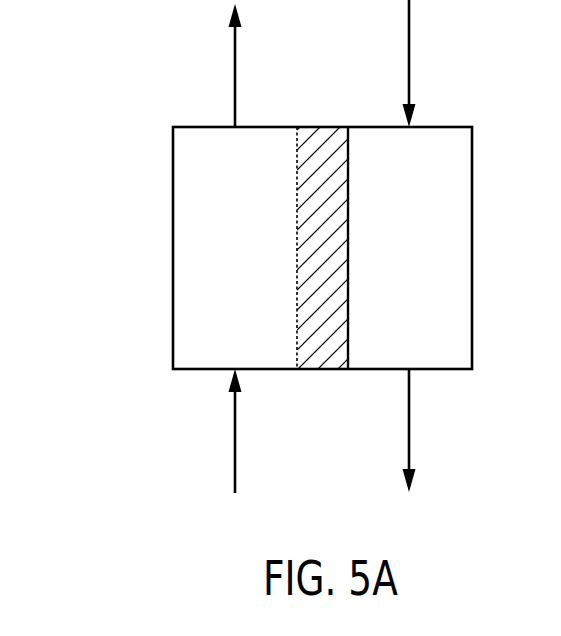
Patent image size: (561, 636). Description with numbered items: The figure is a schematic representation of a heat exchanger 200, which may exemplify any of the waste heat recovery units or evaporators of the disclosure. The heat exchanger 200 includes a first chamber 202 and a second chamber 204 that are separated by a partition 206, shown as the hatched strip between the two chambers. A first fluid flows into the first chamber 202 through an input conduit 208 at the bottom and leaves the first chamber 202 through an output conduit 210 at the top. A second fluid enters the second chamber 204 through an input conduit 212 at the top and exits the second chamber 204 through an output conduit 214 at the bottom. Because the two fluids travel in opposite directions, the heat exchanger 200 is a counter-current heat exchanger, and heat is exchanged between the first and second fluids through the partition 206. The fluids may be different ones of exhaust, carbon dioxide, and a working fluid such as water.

The heat exchanger 200 is at (96, 336).
The first chamber 202 is at (252, 258).
The second chamber 204 is at (425, 258).
The partition 206 is at (322, 145).
The input conduit 208 is at (233, 441).
The output conduit 210 is at (235, 74).
The input conduit 212 is at (409, 66).
The output conduit 214 is at (410, 421).